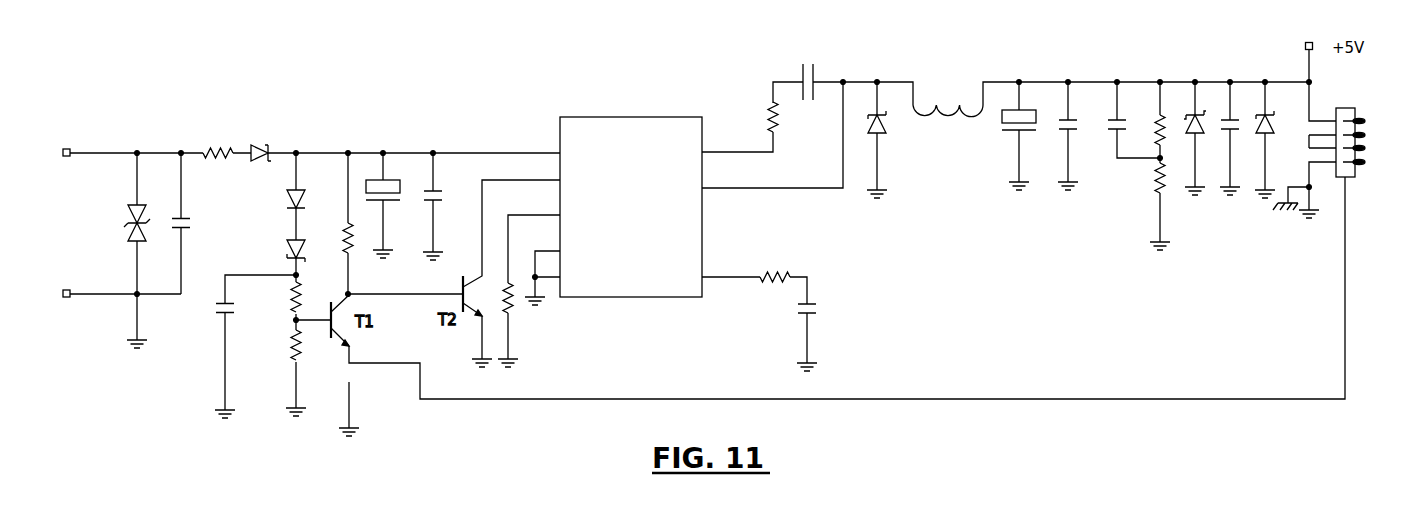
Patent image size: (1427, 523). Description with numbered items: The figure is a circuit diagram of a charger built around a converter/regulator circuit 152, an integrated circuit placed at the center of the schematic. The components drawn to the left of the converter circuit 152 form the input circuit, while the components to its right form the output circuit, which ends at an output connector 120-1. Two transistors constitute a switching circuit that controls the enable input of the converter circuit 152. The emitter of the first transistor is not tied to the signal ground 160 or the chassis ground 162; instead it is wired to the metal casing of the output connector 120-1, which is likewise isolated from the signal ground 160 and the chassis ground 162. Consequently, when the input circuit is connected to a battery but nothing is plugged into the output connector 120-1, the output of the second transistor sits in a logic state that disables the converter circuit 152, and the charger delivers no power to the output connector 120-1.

The converter/regulator circuit 152 is at (630, 297).
The signal ground 160 is at (352, 413).
The chassis ground 162 is at (1282, 200).
The output connector 120-1 is at (1347, 105).